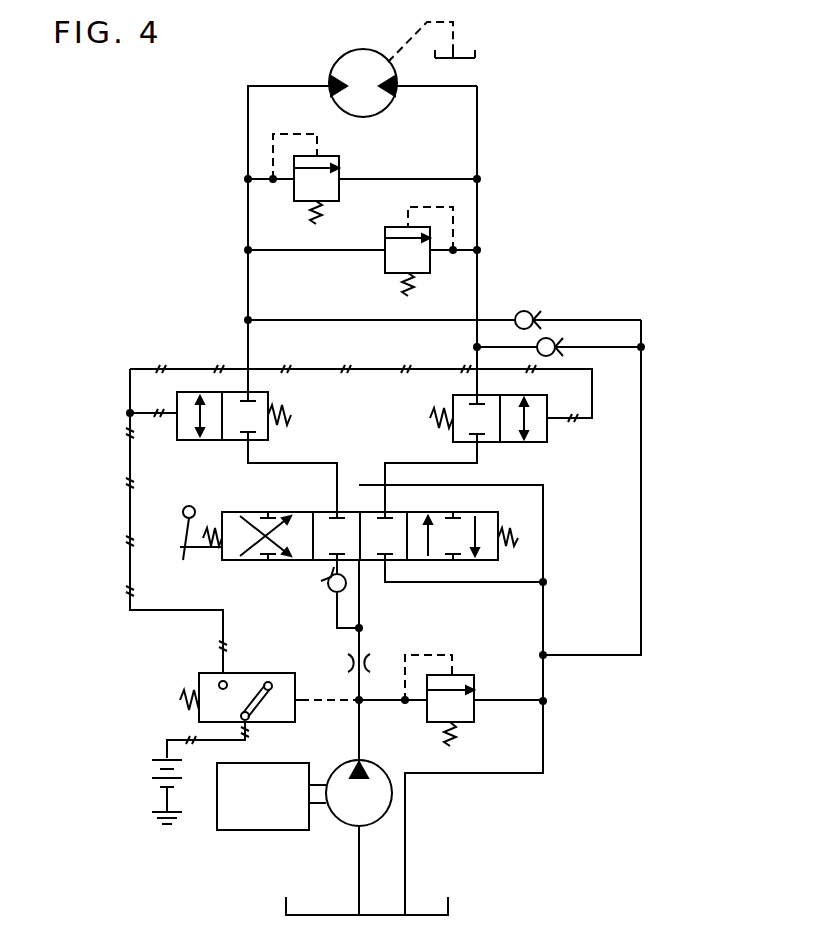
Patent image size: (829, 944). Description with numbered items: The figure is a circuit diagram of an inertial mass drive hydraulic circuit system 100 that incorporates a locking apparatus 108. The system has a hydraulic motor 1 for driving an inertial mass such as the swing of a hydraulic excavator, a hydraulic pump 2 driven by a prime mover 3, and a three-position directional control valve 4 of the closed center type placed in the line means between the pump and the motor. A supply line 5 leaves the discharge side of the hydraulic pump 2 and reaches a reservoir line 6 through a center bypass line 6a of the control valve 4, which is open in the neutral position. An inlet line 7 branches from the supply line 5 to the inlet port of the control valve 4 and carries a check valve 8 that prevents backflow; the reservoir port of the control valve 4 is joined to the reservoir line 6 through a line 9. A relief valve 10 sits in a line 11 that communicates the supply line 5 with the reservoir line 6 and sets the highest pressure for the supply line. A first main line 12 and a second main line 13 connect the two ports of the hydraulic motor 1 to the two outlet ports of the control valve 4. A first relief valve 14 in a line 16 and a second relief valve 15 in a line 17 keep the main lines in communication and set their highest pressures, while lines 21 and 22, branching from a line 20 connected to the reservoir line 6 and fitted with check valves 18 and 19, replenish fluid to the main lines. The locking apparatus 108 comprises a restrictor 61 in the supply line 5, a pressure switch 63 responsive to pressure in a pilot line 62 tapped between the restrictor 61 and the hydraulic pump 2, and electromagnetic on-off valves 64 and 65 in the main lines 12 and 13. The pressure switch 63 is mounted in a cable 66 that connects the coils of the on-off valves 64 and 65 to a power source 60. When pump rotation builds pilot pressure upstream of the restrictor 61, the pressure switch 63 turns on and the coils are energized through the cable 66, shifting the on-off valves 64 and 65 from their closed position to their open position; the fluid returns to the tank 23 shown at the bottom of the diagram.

The hydraulic motor 1 is at (339, 58).
The inertial mass drive hydraulic circuit system 100 is at (493, 107).
The first main line 12 is at (248, 140).
The second main line 13 is at (477, 168).
The first relief valve 14 is at (339, 160).
The second relief valve 15 is at (385, 262).
The line 16 is at (400, 179).
The line 17 is at (308, 250).
The check valve 18 is at (530, 311).
The check valve 19 is at (556, 341).
The line 20 is at (641, 418).
The line 21 is at (575, 320).
The line 22 is at (600, 348).
The cable 66 is at (362, 369).
The locking apparatus 108 is at (110, 395).
The electromagnetic on-off valve 64 is at (185, 440).
The electromagnetic on-off valve 65 is at (549, 435).
The three-position directional control valve 4 is at (237, 512).
The check valve 8 is at (327, 588).
The inlet line 7 is at (337, 625).
The center bypass line 6a is at (359, 606).
The line 9 is at (475, 582).
The reservoir line 6 is at (544, 612).
The restrictor 61 is at (346, 664).
The pilot line 62 is at (325, 700).
The pressure switch 63 is at (205, 673).
The power source 60 is at (160, 758).
The line 11 is at (500, 700).
The relief valve 10 is at (474, 710).
The supply line 5 is at (359, 730).
The hydraulic pump 2 is at (340, 822).
The prime mover 3 is at (240, 830).
The tank 23 is at (450, 905).